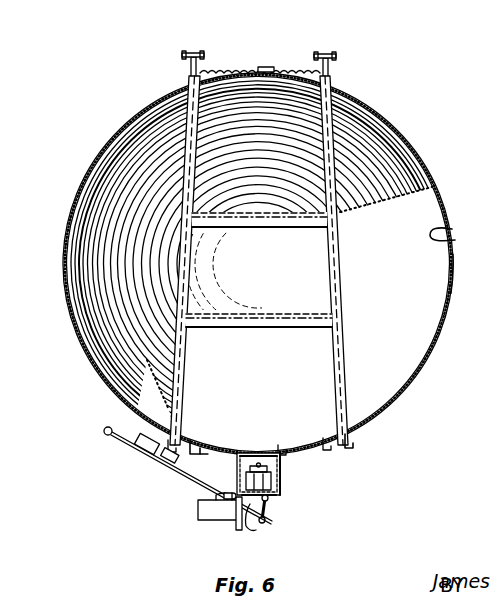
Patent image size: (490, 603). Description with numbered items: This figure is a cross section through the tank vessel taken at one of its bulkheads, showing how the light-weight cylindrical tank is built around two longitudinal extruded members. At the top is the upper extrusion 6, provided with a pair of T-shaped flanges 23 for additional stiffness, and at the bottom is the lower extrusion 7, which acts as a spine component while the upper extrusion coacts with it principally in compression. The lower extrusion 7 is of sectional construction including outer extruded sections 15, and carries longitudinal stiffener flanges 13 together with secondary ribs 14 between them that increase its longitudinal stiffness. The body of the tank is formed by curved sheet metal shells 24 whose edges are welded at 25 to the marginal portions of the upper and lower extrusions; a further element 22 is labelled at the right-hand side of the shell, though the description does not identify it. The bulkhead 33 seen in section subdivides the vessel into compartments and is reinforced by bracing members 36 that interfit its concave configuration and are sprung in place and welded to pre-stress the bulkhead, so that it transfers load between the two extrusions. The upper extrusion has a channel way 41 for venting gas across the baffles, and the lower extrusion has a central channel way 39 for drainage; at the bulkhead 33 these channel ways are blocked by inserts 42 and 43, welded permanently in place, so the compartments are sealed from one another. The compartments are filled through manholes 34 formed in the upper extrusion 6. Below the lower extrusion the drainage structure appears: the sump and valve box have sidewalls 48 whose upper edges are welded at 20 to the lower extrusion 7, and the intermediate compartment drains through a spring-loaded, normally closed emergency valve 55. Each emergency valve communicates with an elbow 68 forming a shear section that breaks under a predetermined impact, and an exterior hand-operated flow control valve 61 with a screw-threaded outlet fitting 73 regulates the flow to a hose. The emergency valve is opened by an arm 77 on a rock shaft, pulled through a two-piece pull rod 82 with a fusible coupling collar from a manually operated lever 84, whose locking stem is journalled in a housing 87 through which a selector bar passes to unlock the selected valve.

The upper extrusion 6 is at (181, 46).
The insert 42 is at (257, 68).
The channel way 41 is at (268, 71).
The flanges 23 is at (331, 56).
The weld 25 is at (185, 81).
The side wall panels or shells 24 is at (70, 214).
The bulkheads 33 is at (410, 220).
The manholes or hatches 34 is at (455, 234).
The drum shell 22 is at (453, 281).
The bracing members 36 is at (183, 290).
The housing 87 is at (133, 430).
The manually operated lever 84 is at (111, 443).
The pull rod 82 is at (175, 474).
The flow control valve 61 is at (204, 497).
The outlet fitting 73 is at (213, 521).
The outer extruded sections 15 is at (192, 445).
The emergency valve 55 is at (238, 471).
The insert 43 is at (263, 455).
The central channel way 39 is at (274, 452).
The weld 20 is at (282, 460).
The sidewalls 48 is at (280, 483).
The arm 77 is at (267, 518).
The elbow 68 is at (257, 533).
The secondary flanges or ribs 14 is at (286, 454).
The longitudinal stiffener ribs or flanges 13 is at (354, 448).
The lower extrusion 7 is at (332, 467).